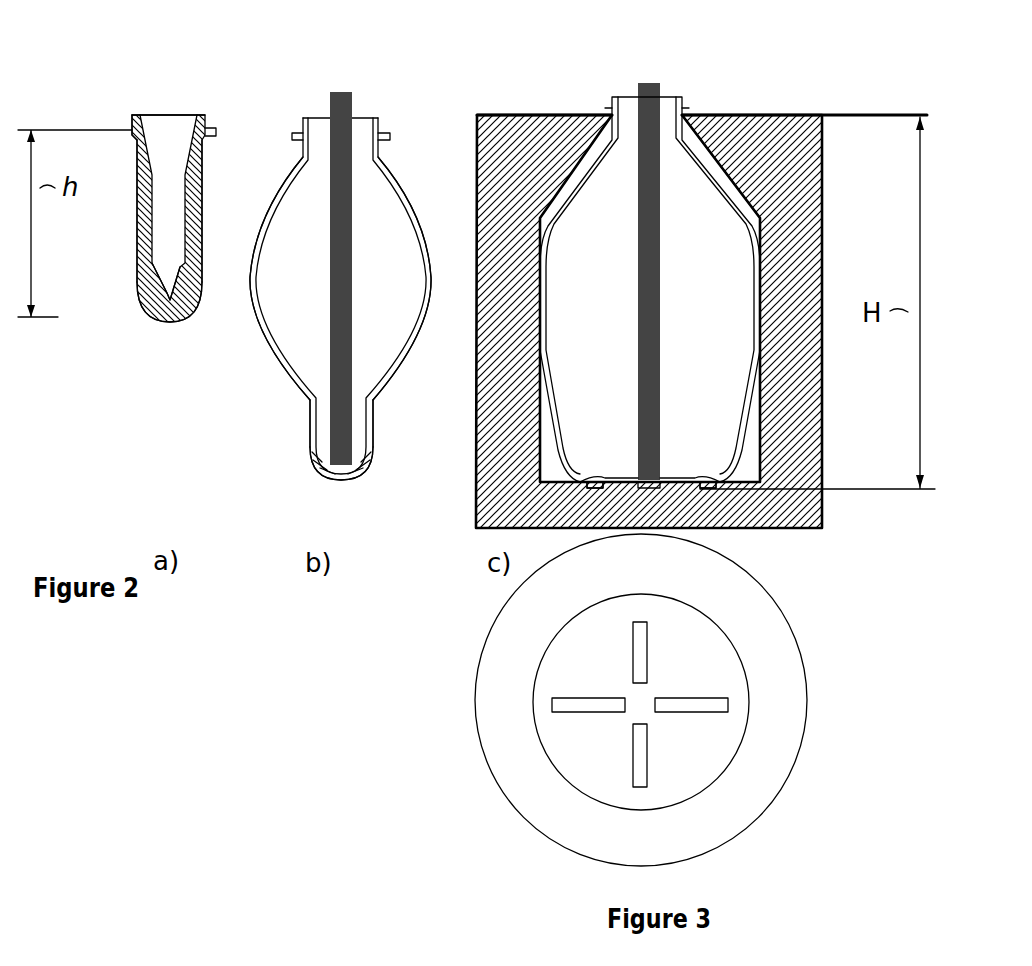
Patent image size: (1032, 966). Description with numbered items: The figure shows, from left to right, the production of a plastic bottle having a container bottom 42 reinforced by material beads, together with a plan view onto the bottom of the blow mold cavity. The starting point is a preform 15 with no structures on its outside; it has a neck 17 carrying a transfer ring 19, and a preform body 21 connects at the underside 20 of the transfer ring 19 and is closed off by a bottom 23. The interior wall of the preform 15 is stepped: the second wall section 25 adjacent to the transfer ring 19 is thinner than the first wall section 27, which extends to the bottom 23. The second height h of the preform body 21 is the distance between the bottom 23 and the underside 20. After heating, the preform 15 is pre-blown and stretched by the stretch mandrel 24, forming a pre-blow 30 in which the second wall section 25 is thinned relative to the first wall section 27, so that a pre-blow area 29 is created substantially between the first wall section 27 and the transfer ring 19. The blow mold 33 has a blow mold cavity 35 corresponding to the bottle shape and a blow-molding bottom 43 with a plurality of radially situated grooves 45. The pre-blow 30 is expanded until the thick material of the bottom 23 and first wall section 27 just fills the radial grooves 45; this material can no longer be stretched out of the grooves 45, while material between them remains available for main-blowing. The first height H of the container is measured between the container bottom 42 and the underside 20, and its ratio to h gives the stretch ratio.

In FIG. 2, the preform 15 is at (181, 100).
In FIG. 2, the neck 17 is at (212, 118).
In FIG. 2, the transfer ring 19 is at (217, 133).
In FIG. 2, the underside of transfer ring 20 is at (132, 135).
In FIG. 2, the preform body 21 is at (203, 203).
In FIG. 2, the bottom 23 is at (165, 322).
In FIG. 2, the stretch mandrel 24 is at (352, 107).
In FIG. 2, the second wall section 25 is at (137, 220).
In FIG. 2, the first wall section 27 is at (138, 283).
In FIG. 2, the pre-blow area 29 is at (403, 217).
In FIG. 2, the pre-blow 30 is at (409, 165).
In FIG. 2, the blow mold 33 is at (822, 172).
In FIG. 2, the blow mold cavity 35 is at (758, 242).
In FIG. 2, the container bottom 42 is at (683, 482).
In FIG. 2, the blow-molding bottom 43 is at (727, 482).
In FIG. 3, the blow-molding bottom 43 is at (578, 760).
In FIG. 2, the radial grooves 45 is at (588, 489).
In FIG. 3, the radial grooves 45 is at (570, 703).